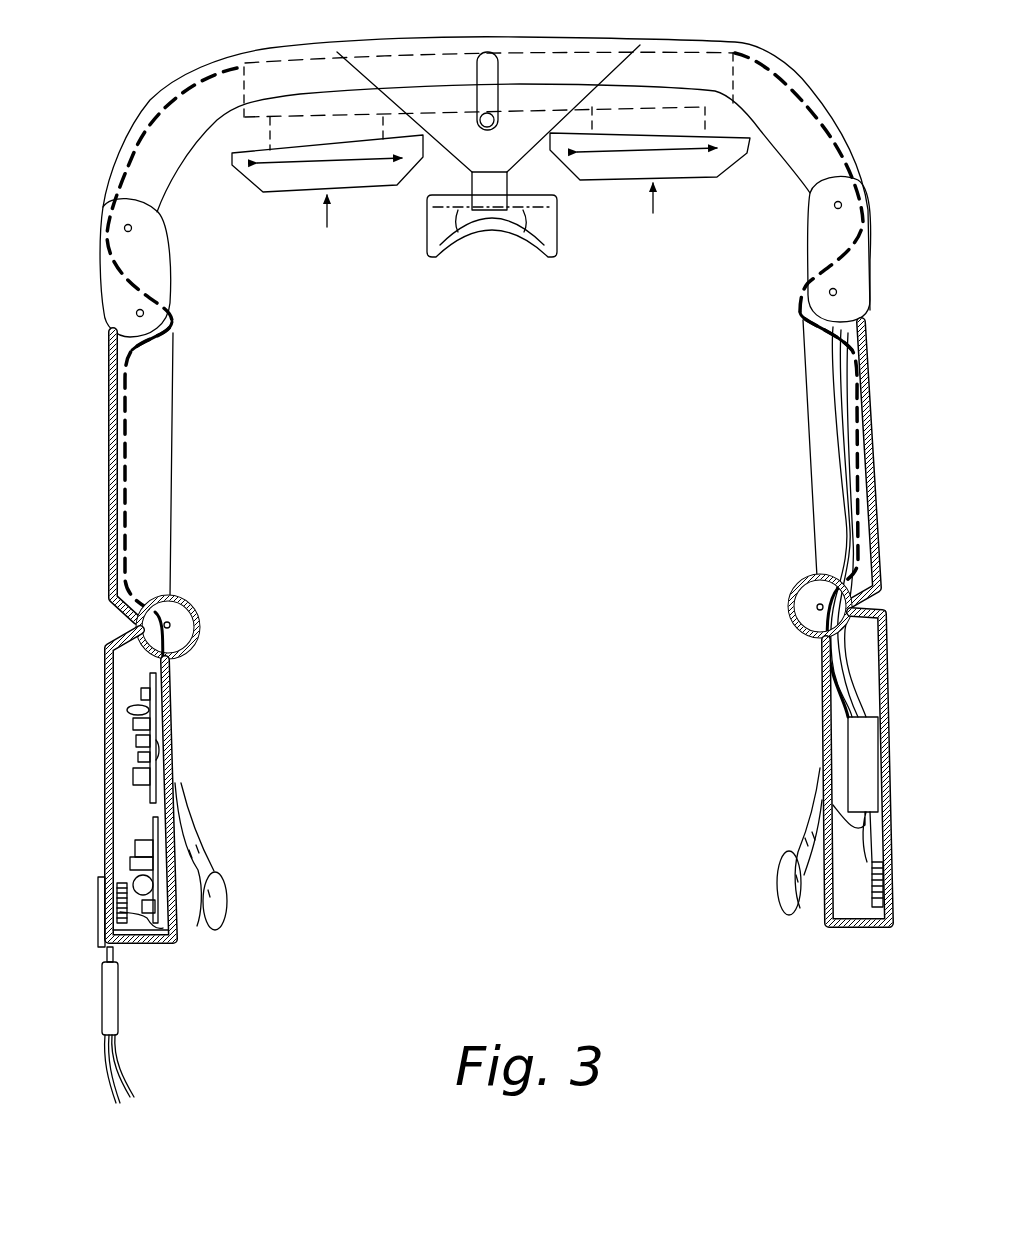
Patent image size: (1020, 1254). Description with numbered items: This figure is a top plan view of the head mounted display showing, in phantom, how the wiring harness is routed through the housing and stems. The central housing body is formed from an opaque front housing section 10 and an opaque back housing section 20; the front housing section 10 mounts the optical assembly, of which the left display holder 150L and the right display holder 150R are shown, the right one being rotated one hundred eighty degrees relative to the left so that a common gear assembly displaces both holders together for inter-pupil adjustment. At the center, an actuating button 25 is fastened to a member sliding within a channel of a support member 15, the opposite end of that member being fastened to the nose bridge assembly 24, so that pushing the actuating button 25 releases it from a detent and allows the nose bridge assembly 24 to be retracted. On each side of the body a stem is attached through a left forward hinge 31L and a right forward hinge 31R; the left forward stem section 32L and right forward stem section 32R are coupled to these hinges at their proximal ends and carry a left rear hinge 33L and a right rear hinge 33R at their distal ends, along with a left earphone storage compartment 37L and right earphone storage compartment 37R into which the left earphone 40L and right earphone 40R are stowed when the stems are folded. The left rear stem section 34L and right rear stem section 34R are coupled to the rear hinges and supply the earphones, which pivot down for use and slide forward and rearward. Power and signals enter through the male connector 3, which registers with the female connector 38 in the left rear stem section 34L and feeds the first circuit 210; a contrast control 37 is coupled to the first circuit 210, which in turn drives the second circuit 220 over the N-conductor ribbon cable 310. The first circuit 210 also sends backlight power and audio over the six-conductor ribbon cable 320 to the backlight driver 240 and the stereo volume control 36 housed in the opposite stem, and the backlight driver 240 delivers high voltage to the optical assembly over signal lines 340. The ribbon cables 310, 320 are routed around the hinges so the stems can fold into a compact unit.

The front housing section 10 is at (197, 105).
The support member 15 is at (407, 70).
The back housing section 20 is at (733, 123).
The actuating button 25 is at (487, 130).
The nose bridge assembly 24 is at (490, 235).
The left display holder 150L is at (327, 196).
The right display holder 150R is at (650, 190).
The left forward hinge 31L is at (112, 272).
The right forward hinge 31R is at (820, 220).
The N-conductor ribbon cable 310 is at (142, 352).
The 6-conductor ribbon cable 320 is at (823, 327).
The left forward stem section 32L is at (112, 433).
The right forward stem section 32R is at (863, 463).
The left earphone storage compartment 37L is at (157, 463).
The right earphone storage compartment 37R is at (820, 437).
The signal lines 340 is at (843, 353).
The left rear hinge 33L is at (182, 630).
The right rear hinge 33R is at (803, 593).
The left rear stem section 34L is at (170, 690).
The right rear stem section 34R is at (820, 668).
The second circuit 220 is at (155, 718).
The backlight driver 240 is at (860, 742).
The left earphone 40L is at (227, 893).
The right earphone 40R is at (777, 867).
The stereo volume control 36 is at (870, 887).
The female connector 38 is at (113, 947).
The first circuit 210 is at (173, 927).
The contrast control 37 is at (160, 950).
The male connector 3 is at (118, 1010).